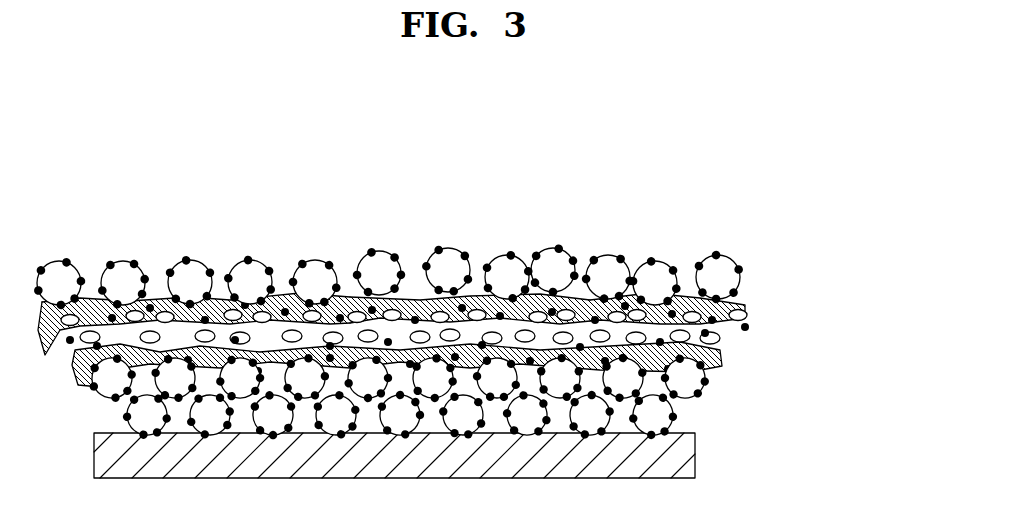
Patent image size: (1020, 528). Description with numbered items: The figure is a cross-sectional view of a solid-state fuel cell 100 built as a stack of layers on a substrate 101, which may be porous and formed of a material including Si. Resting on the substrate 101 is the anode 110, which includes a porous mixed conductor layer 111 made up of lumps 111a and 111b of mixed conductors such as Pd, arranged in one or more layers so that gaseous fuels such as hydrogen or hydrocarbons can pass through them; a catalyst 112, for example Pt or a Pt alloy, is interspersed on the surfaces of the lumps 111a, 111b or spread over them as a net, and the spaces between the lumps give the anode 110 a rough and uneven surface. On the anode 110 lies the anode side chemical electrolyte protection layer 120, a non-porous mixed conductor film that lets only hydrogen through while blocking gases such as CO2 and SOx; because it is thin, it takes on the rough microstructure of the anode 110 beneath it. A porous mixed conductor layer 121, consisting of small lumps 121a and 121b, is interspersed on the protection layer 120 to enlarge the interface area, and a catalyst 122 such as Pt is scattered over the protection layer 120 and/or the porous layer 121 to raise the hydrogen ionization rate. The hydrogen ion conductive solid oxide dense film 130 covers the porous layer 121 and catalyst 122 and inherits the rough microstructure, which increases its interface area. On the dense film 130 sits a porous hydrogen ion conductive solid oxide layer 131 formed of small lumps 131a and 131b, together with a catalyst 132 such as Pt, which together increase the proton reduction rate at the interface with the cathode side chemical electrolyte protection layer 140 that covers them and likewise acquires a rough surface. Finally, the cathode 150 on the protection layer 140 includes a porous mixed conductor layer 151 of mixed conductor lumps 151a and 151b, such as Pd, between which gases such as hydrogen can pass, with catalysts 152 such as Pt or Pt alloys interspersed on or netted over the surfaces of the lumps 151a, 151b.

The solid-state fuel cell 100 is at (272, 163).
The substrate 101 is at (690, 458).
The anode 110 is at (853, 354).
The porous mixed conductor layer 111 is at (800, 407).
The lump of mixed conductor 111a is at (668, 384).
The lump of mixed conductor 111b is at (665, 420).
The catalyst 112 is at (720, 377).
The anode side chemical electrolyte protection layer 120 is at (73, 362).
The porous mixed conductor layer 121 is at (128, 188).
The small lump of mixed conductor 121a is at (146, 345).
The small lump of mixed conductor 121b is at (198, 320).
The catalyst 122 is at (90, 350).
The hydrogen ion conductive solid oxide dense film 130 is at (437, 155).
The porous hydrogen ion conductive solid oxide layer 131 is at (405, 191).
The small lump of hydrogen ion conductive solid oxide 131a is at (420, 295).
The small lump of hydrogen ion conductive solid oxide 131b is at (473, 293).
The catalyst 132 is at (563, 322).
The cathode side chemical electrolyte protection layer 140 is at (740, 312).
The cathode 150 is at (793, 155).
The porous mixed conductor layer 151 is at (725, 191).
The lump of mixed conductor 151a is at (647, 270).
The lump of mixed conductor 151b is at (695, 263).
The catalyst 152 is at (690, 288).